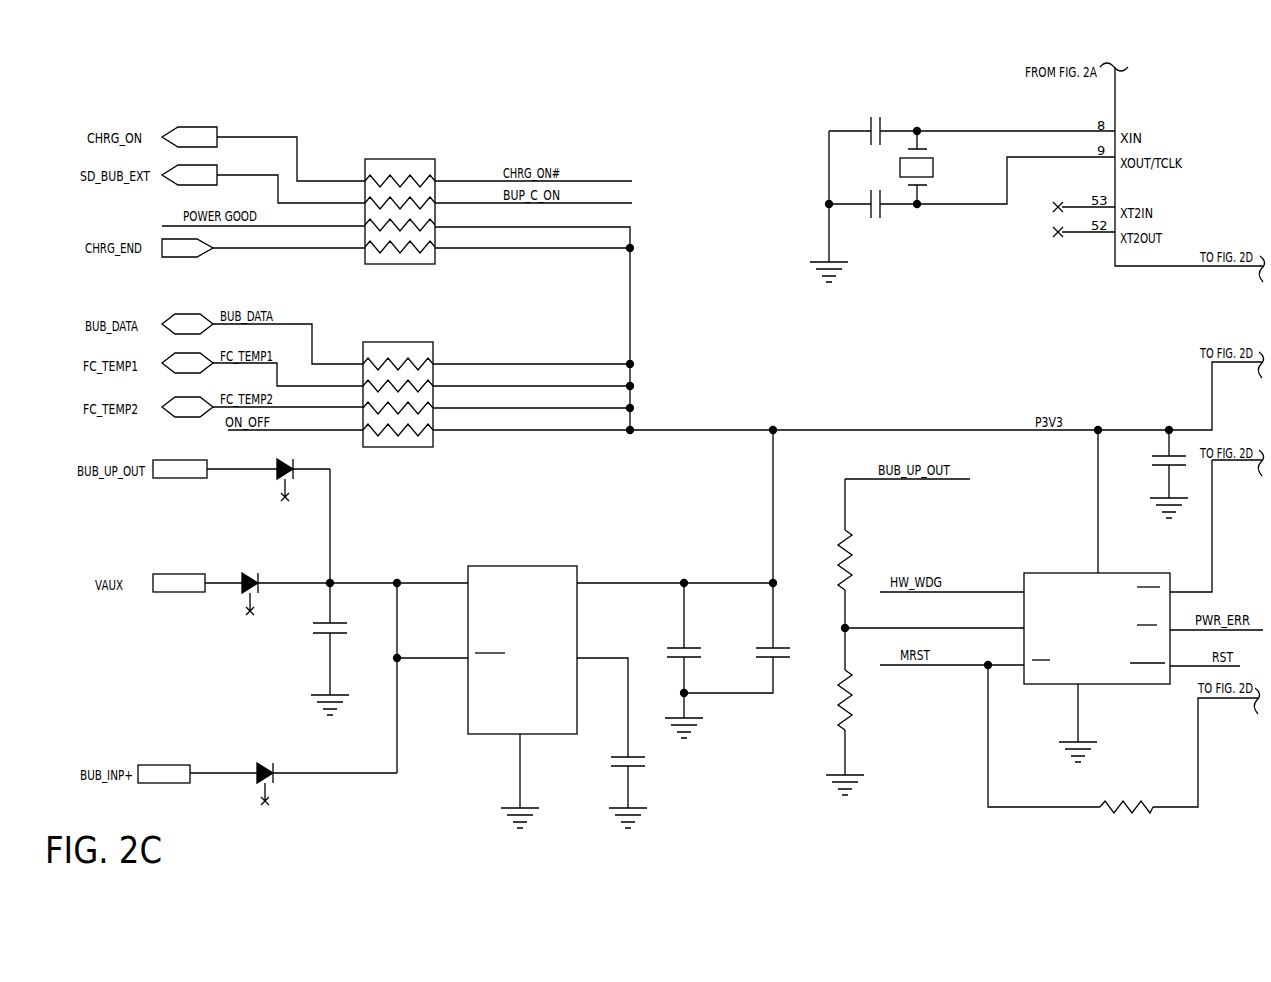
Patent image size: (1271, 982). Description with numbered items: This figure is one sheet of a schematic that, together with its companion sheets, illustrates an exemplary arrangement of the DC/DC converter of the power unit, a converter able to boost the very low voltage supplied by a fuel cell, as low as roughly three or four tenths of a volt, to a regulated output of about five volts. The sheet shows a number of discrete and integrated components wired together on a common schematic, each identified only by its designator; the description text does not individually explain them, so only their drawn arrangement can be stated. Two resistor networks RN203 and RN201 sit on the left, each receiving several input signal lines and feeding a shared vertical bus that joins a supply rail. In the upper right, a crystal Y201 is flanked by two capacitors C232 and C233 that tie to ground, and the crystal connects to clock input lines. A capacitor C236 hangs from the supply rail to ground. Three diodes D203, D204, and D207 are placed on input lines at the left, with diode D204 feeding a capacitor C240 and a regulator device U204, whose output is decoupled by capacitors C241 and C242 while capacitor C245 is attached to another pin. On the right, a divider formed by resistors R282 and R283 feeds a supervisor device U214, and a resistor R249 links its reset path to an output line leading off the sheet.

The resistor network 47K RN203 is at (400, 215).
The resistor network 47K RN201 is at (398, 396).
The crystal load capacitor (NC) C232 is at (870, 122).
The crystal load capacitor (NC) C233 is at (870, 215).
The 8 MHz crystal Y201 is at (933, 167).
The 0.1u decoupling capacitor C236 is at (1155, 474).
The diode MBD301LT1 D203 is at (270, 506).
The diode MBD301LT1 D204 is at (261, 616).
The diode MBD301LT1 D207 is at (293, 798).
The 47uF/10V capacitor C240 is at (306, 649).
The MAX8511EXK33-T voltage regulator U204 is at (532, 686).
The 0.1u capacitor C241 is at (672, 660).
The 1uF capacitor C242 is at (737, 561).
The capacitor (NC) C245 is at (643, 786).
The 499K resistor R282 is at (832, 553).
The 147K resistor R283 is at (838, 711).
The ADM706SAR supervisor U214 is at (1099, 658).
The 1k resistor R249 is at (1120, 801).